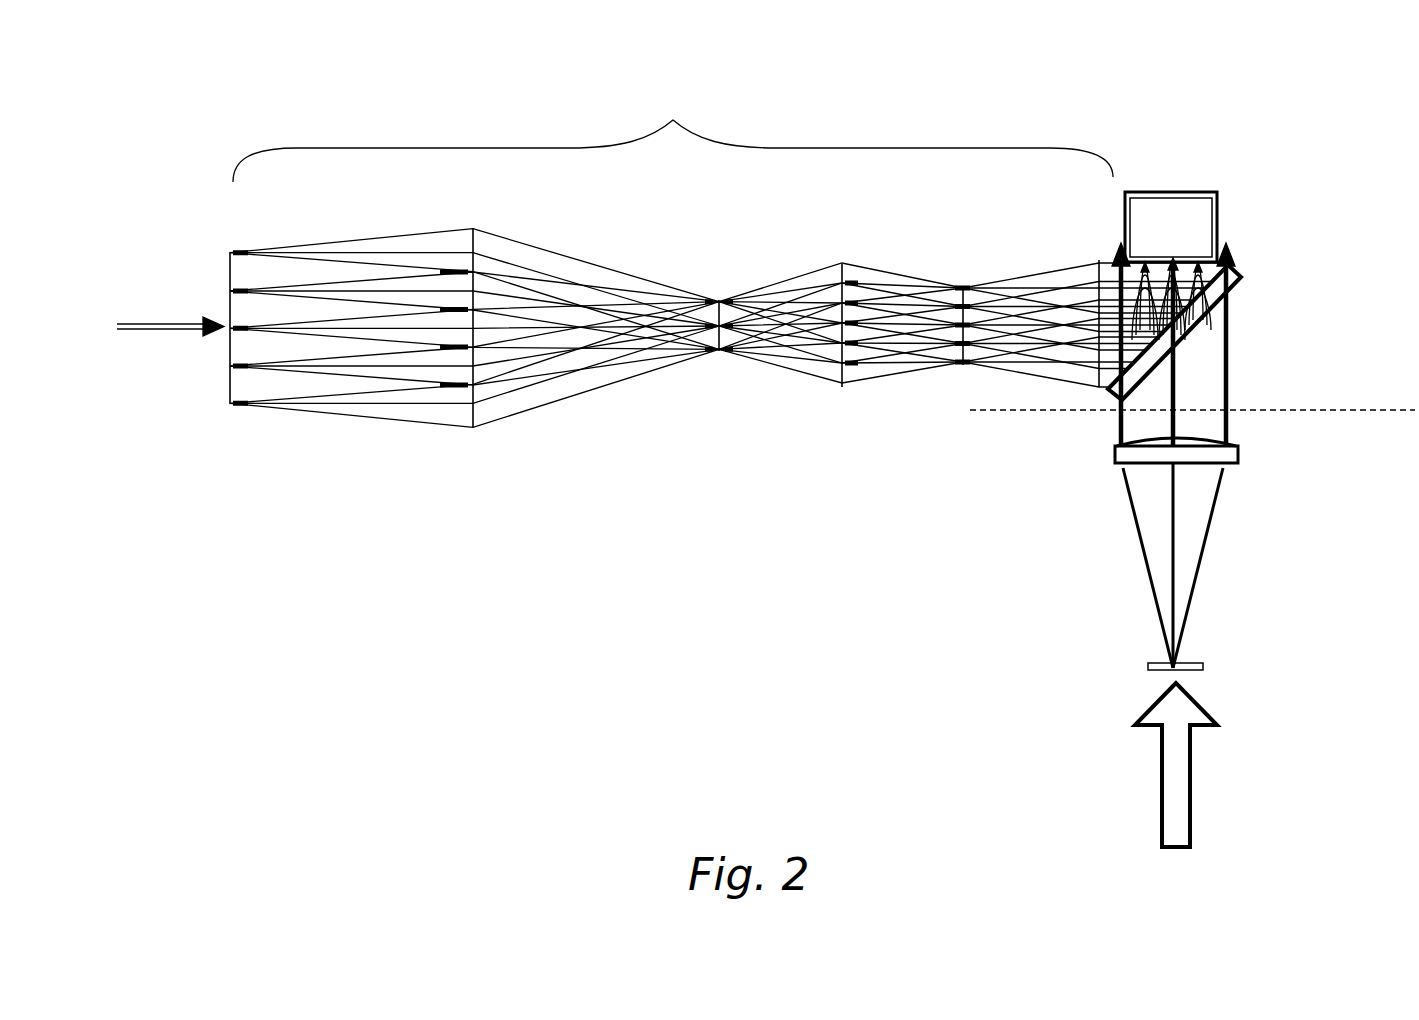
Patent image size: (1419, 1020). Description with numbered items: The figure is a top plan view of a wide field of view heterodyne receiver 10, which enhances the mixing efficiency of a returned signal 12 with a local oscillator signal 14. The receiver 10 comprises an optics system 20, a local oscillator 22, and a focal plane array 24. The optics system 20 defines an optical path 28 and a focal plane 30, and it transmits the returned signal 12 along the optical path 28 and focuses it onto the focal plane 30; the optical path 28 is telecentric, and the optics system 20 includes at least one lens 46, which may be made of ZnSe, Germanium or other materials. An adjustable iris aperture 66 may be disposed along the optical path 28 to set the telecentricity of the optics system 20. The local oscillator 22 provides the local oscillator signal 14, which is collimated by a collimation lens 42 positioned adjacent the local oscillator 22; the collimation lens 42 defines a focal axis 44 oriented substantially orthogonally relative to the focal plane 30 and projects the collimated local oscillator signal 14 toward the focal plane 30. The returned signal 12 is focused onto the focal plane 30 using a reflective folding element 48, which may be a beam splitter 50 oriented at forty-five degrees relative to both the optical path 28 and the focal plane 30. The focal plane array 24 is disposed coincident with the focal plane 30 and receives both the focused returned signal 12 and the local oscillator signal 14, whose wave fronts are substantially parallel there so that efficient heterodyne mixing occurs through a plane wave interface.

The wide field of view heterodyne receiver 10 is at (1080, 103).
The returned signal 12 is at (148, 323).
The local oscillator signal 14 is at (1122, 397).
The optics system 20 is at (673, 133).
The optical path 28 is at (673, 133).
The local oscillator 22 is at (1197, 702).
The focal plane array 24 is at (1238, 227).
The focal plane 30 is at (1190, 262).
The collimation lens 42 is at (1238, 446).
The focal axis 44 is at (1170, 488).
The lens 46 is at (231, 399).
The reflective folding element 48 is at (1233, 344).
The beam splitter 50 is at (1245, 281).
The adjustable iris aperture 66 is at (719, 352).